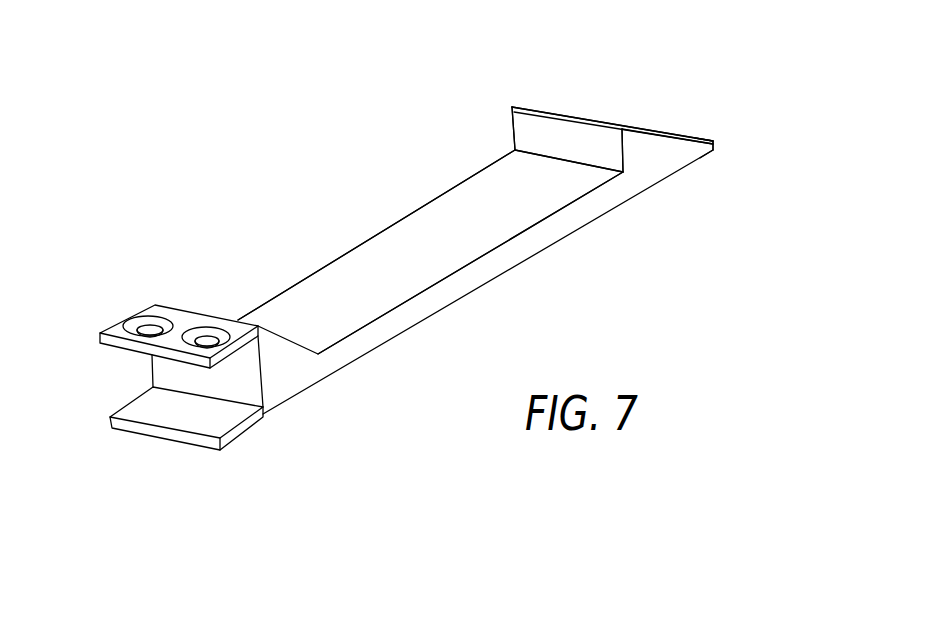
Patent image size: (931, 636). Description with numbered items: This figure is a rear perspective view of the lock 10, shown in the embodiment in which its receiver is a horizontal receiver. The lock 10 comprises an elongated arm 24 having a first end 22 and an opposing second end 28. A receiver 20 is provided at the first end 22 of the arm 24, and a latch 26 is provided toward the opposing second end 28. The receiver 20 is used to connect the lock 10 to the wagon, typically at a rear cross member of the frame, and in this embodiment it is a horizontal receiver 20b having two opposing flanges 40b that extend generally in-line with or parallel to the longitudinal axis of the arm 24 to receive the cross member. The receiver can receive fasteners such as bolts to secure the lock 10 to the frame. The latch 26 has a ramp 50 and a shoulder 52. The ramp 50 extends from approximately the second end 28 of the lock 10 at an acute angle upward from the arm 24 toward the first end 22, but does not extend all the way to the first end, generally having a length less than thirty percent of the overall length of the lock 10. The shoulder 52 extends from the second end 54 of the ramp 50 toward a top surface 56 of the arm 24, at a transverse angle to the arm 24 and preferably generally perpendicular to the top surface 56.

The lock 10 is at (383, 333).
The receiver 20 is at (186, 465).
The horizontal receiver 20b is at (165, 440).
The first end 22 is at (150, 330).
The arm 24 is at (428, 250).
The latch 26 is at (655, 133).
The second end 28 is at (717, 143).
The opposing flanges 40b is at (159, 424).
The ramp 50 is at (610, 123).
The shoulder 52 is at (605, 145).
The second end of the ramp 54 is at (512, 130).
The top surface 56 is at (523, 192).